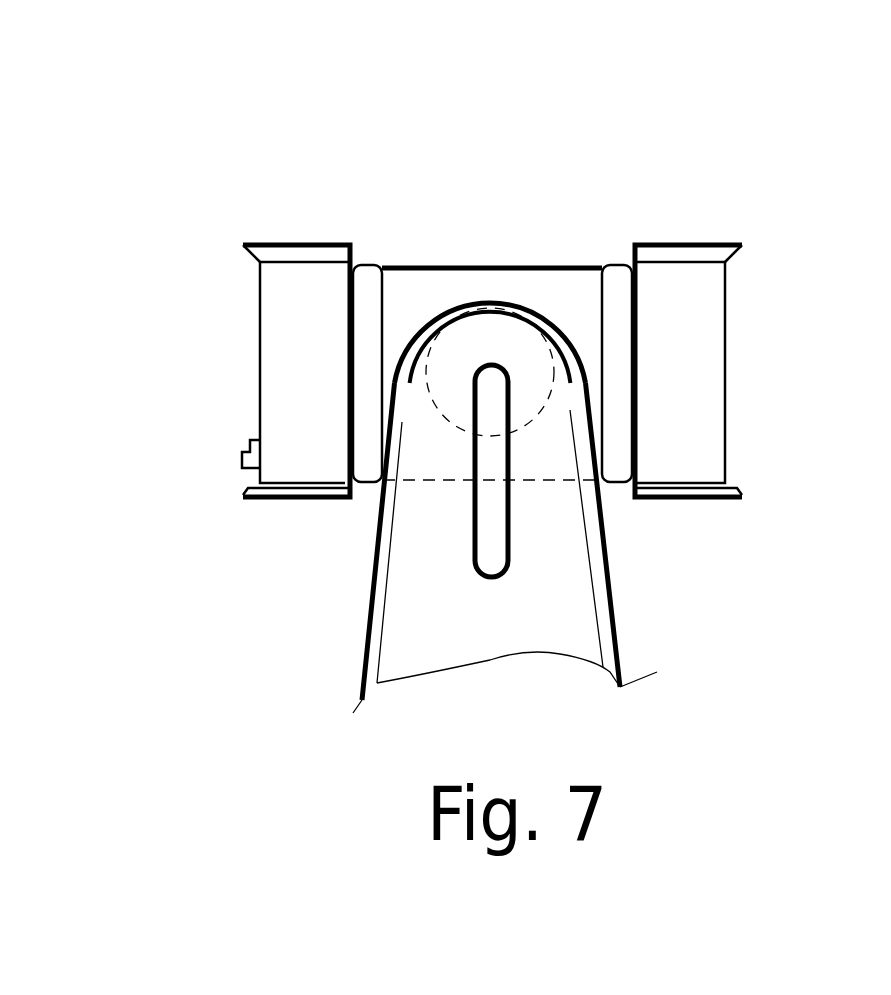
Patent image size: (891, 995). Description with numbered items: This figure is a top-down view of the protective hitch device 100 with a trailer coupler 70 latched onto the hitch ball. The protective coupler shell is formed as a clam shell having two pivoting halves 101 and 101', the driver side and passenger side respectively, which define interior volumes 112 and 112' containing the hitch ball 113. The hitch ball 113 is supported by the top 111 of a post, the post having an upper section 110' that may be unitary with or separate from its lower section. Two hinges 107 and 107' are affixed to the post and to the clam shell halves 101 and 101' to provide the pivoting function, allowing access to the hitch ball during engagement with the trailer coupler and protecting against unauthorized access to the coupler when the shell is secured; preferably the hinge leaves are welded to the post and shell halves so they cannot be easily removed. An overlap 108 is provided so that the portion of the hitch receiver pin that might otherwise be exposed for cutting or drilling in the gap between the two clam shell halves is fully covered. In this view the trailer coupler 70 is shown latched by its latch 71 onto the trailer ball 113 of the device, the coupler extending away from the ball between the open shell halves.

The tool assembly 100 is at (556, 80).
The pivoting half of clam shell 101 is at (250, 371).
The pivoting half of clam shell 101' is at (737, 371).
The hinge 107 is at (331, 319).
The hinge 107' is at (648, 320).
The overlap 108 is at (243, 453).
The upper section of post 110' is at (490, 288).
The top of post 111 is at (413, 268).
The interior volume 112 is at (304, 372).
The interior volume 112' is at (681, 372).
The hitch ball 113 is at (498, 322).
The trailer coupler 70 is at (504, 644).
The trailer coupler latch 71 is at (488, 552).